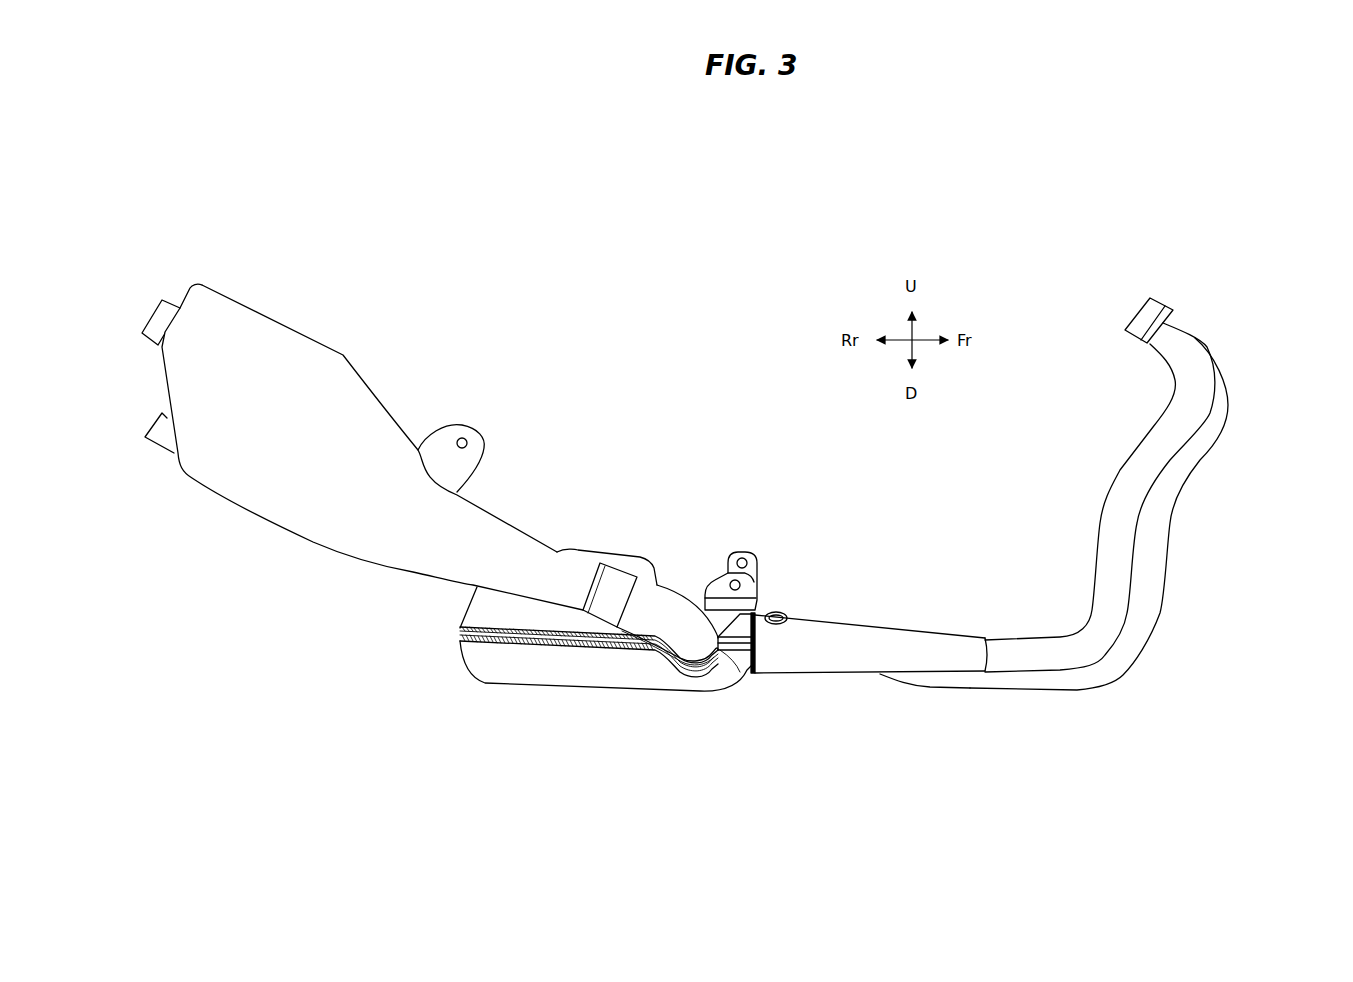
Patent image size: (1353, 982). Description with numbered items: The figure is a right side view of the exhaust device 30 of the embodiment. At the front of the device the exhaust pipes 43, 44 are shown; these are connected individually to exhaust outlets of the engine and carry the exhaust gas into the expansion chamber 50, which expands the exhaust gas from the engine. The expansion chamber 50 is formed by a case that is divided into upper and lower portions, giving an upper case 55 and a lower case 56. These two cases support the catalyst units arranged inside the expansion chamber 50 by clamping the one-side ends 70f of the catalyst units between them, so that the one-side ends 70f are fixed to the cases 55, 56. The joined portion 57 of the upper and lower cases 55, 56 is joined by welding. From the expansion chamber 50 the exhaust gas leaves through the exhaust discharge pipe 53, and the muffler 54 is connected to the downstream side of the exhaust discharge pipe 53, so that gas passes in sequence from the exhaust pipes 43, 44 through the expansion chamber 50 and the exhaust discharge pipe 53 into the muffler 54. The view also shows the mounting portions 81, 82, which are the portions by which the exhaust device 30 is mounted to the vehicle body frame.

The exhaust device 30 is at (673, 384).
The exhaust pipe 43 is at (1172, 537).
The exhaust pipe 44 is at (1123, 467).
The expansion chamber 50 is at (552, 667).
The exhaust discharge pipe 53 is at (677, 590).
The muffler 54 is at (288, 340).
The upper case 55 is at (628, 557).
The lower case 56 is at (550, 681).
The joined portion 57 is at (495, 641).
The one-side end 70f is at (742, 667).
The mounting portion 81 is at (753, 563).
The mounting portion 82 is at (475, 428).